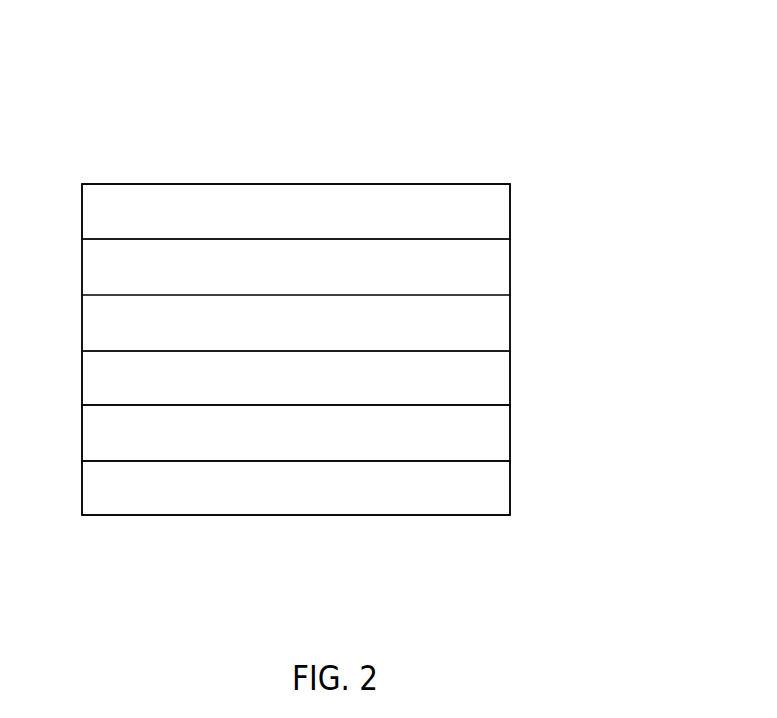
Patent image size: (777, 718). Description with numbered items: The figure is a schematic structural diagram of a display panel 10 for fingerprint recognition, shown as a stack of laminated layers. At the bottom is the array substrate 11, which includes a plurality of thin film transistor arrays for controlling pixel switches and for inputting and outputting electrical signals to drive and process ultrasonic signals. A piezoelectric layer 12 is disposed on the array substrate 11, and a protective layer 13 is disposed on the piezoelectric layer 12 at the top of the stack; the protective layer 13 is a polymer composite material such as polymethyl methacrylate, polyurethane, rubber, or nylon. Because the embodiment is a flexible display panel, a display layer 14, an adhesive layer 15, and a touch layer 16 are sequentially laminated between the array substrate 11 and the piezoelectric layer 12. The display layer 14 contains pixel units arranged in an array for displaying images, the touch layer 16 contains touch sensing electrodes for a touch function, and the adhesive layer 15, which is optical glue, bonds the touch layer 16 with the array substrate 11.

The display panel 10 is at (158, 140).
The array substrate 11 is at (488, 497).
The piezoelectric layer 12 is at (488, 272).
The protective layer 13 is at (488, 215).
The display layer 14 is at (488, 437).
The adhesive layer 15 is at (488, 380).
The touch layer 16 is at (488, 327).